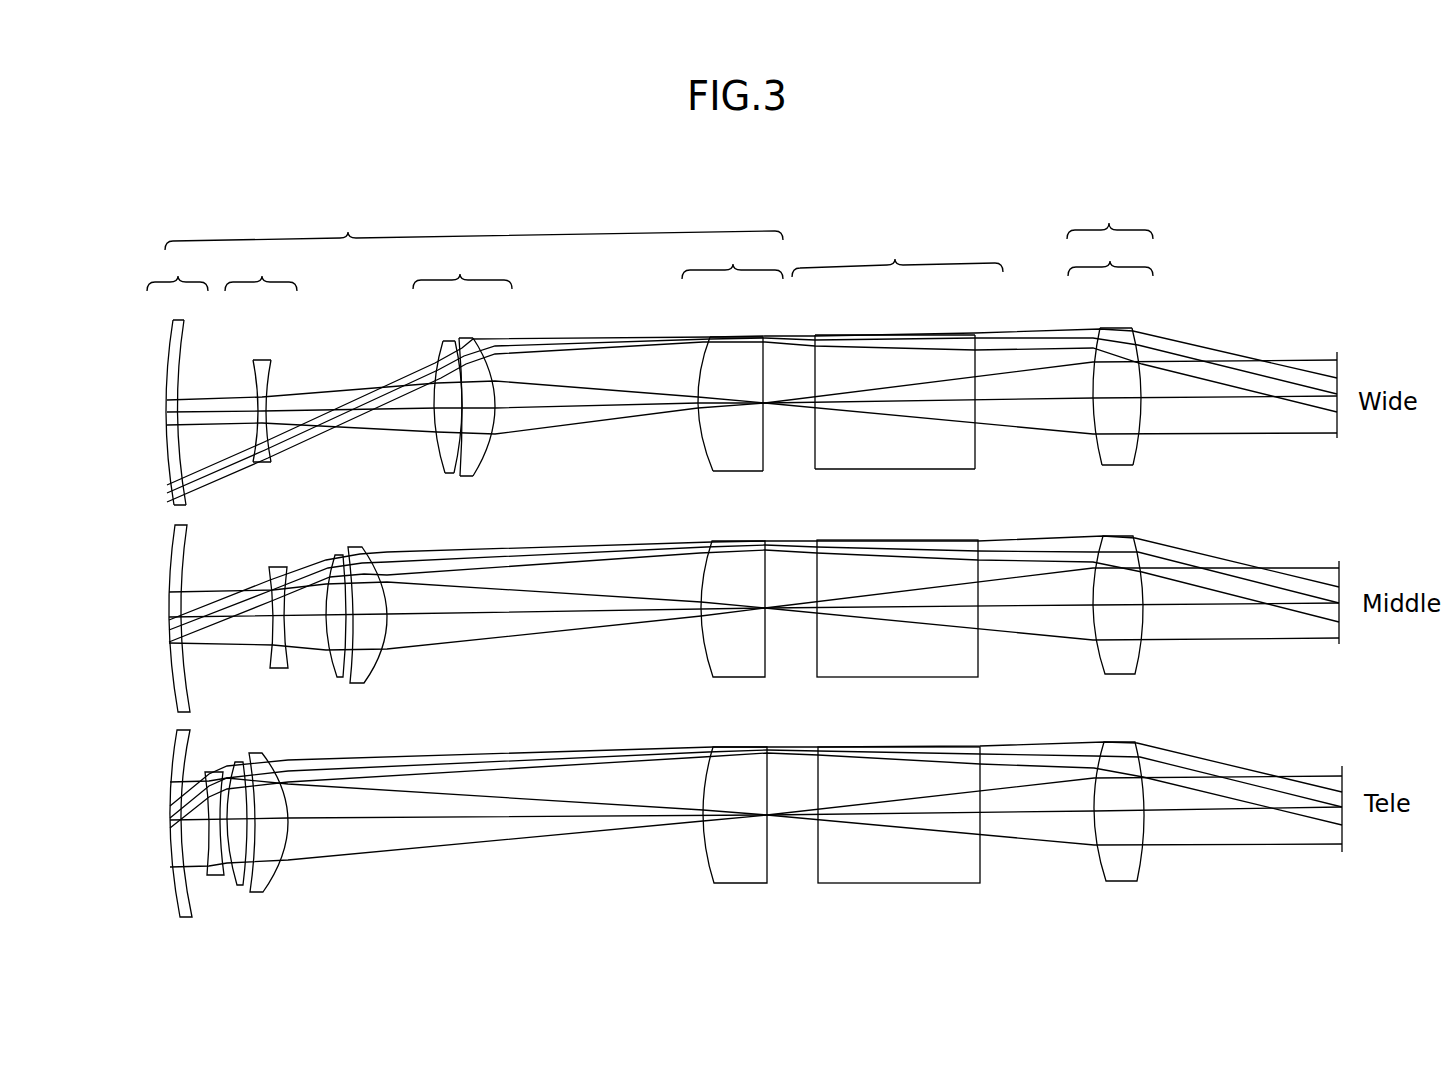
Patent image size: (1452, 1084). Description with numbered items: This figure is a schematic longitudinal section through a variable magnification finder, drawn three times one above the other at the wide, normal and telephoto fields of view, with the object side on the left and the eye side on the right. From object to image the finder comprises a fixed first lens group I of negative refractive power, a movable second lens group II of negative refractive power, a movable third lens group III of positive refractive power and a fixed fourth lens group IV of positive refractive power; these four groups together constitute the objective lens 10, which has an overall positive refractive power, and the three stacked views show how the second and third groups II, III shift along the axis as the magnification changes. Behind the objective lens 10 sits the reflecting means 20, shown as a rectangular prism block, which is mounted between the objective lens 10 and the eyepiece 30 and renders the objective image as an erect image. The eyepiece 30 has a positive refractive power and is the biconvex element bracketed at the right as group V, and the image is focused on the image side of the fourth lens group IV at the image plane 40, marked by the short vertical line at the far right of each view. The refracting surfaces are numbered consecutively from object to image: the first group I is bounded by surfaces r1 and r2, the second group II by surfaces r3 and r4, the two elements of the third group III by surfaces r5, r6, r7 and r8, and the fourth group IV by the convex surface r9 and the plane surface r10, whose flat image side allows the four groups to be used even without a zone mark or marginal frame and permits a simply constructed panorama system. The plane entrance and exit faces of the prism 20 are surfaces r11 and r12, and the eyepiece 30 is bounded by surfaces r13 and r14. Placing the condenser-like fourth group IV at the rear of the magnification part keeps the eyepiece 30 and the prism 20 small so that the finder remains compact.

The objective lens 10 is at (474, 228).
The reflecting means 20 is at (897, 354).
The eyepiece 30 is at (1110, 330).
The image plane 40 is at (1324, 325).
The first lens group I is at (177, 375).
The second lens group II is at (261, 353).
The third lens group III is at (462, 360).
The fourth lens group IV is at (732, 356).
The fifth lens unit V is at (1110, 256).
The first refracting surface r1 is at (170, 353).
The second refracting surface r2 is at (183, 352).
The third refracting surface r3 is at (255, 380).
The fourth refracting surface r4 is at (269, 380).
The fifth refracting surface r5 is at (437, 366).
The sixth refracting surface r6 is at (457, 358).
The seventh refracting surface r7 is at (462, 360).
The eighth refracting surface r8 is at (487, 363).
The ninth refracting surface r9 is at (704, 357).
The tenth refracting surface r10 is at (763, 357).
The eleventh refracting surface r11 is at (815, 372).
The twelfth refracting surface r12 is at (976, 360).
The thirteenth refracting surface r13 is at (1094, 355).
The fourteenth refracting surface r14 is at (1138, 343).